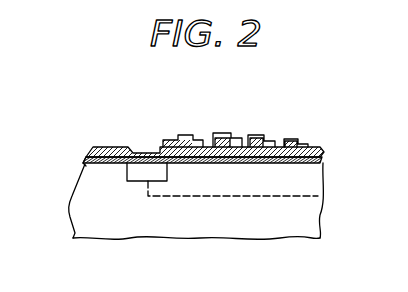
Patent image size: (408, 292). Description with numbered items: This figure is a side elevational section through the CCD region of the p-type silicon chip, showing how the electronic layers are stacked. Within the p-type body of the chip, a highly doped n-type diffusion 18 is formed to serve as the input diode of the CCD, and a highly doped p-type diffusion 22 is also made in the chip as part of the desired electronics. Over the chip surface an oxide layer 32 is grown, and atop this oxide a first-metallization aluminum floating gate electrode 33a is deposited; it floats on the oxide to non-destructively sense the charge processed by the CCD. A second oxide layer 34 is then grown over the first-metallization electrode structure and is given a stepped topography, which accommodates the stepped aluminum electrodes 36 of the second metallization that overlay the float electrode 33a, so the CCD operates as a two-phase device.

The n-type diffusion 18 is at (145, 173).
The p-type diffusion 22 is at (192, 197).
The oxide layer 32 is at (84, 166).
The floating gate electrode 33a is at (323, 165).
The second oxide layer 34 is at (122, 147).
The stepped metallic electrode 36 is at (192, 135).